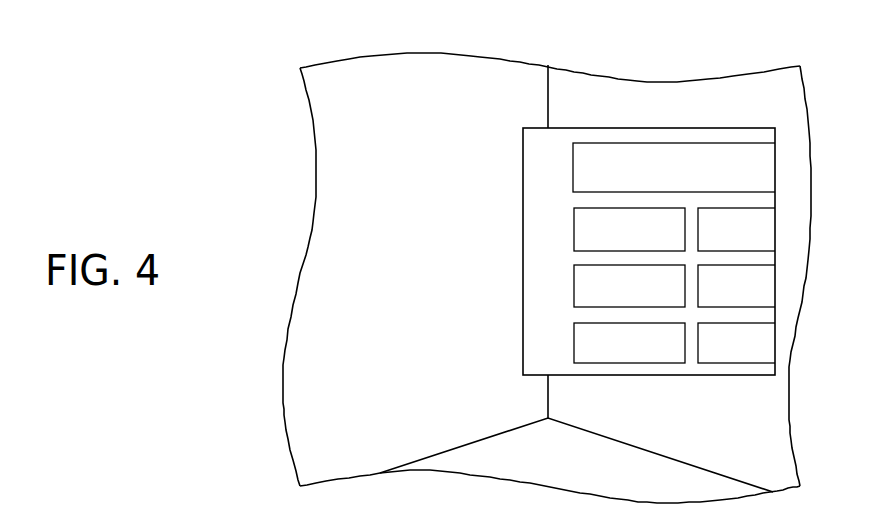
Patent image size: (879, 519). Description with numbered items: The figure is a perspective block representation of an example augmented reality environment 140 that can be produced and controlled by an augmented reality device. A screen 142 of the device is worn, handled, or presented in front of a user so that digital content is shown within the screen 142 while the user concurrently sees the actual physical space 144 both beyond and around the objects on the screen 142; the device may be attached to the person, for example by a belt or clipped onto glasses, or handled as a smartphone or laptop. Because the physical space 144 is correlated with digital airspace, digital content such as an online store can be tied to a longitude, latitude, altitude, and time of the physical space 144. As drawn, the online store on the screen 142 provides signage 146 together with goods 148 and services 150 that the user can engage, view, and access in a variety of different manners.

The augmented reality environment 140 is at (296, 64).
The screen 142 is at (520, 127).
The physical space 144 is at (338, 470).
The signage 146 is at (698, 138).
The goods 148 is at (563, 229).
The services 150 is at (563, 341).